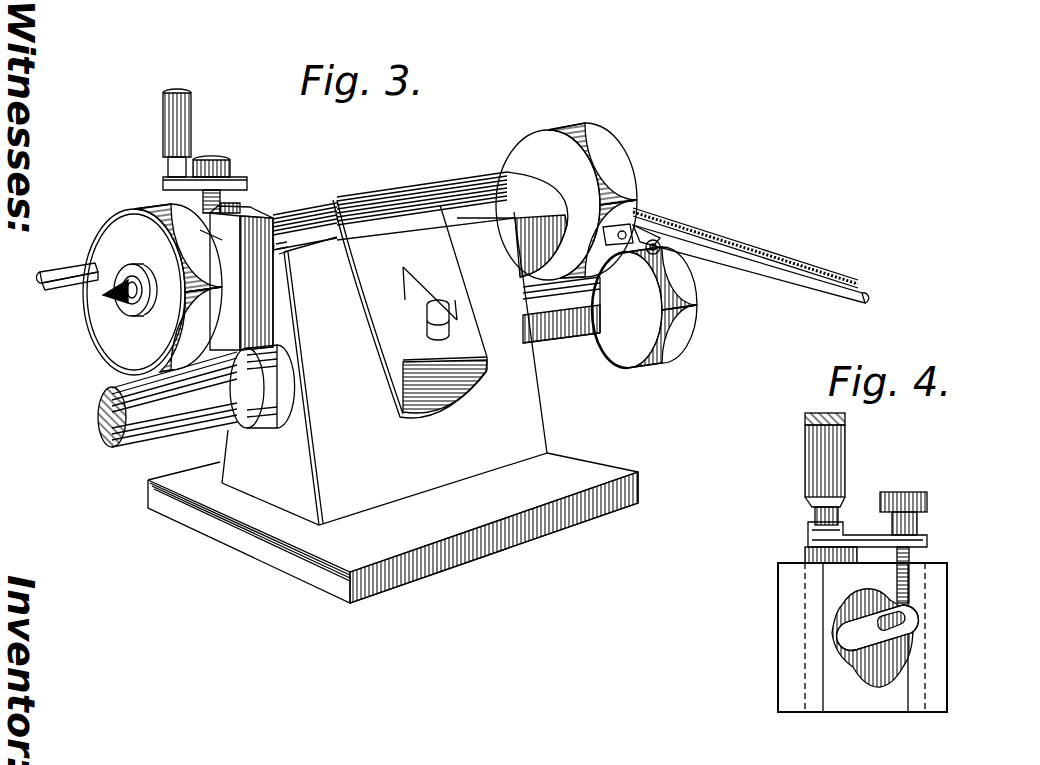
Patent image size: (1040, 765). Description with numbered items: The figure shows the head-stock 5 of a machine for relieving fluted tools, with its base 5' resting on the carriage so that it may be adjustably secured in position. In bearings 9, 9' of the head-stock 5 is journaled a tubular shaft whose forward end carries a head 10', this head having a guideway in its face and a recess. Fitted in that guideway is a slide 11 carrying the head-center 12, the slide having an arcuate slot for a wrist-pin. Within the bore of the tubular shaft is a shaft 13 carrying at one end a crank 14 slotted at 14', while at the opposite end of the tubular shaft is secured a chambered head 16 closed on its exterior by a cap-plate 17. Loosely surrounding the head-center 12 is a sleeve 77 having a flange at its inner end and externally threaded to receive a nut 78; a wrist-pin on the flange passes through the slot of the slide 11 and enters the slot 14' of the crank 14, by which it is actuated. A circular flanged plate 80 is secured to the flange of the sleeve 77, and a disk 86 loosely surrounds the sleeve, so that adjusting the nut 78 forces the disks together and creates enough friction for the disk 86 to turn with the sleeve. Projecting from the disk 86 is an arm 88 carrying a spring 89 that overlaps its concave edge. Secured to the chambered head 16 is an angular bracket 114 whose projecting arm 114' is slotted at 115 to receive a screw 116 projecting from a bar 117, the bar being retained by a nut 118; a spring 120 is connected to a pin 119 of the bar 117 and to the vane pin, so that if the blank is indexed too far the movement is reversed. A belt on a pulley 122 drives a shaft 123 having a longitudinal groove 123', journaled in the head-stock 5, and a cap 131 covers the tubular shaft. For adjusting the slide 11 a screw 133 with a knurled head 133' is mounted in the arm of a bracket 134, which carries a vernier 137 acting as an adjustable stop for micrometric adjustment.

In FIG. 3, the head-stock 5 is at (384, 368).
In FIG. 3, the base 5' is at (393, 528).
In FIG. 3, the bearing 9 is at (305, 222).
In FIG. 3, the bearing 9' is at (426, 197).
In FIG. 3, the head 10' is at (251, 261).
In FIG. 4, the head 10' is at (841, 637).
In FIG. 3, the slide 11 is at (212, 218).
In FIG. 3, the head-center 12 is at (120, 300).
In FIG. 4, the shaft 13 is at (870, 628).
In FIG. 4, the crank 14 is at (919, 629).
In FIG. 4, the slot 14' is at (942, 618).
In FIG. 3, the chambered head 16 is at (566, 201).
In FIG. 3, the cap-plate 17 is at (622, 158).
In FIG. 3, the sleeve 77 is at (130, 305).
In FIG. 3, the nut 78 is at (128, 266).
In FIG. 3, the circular flanged plate 80 is at (205, 281).
In FIG. 3, the disk 86 is at (158, 240).
In FIG. 3, the arm 88 is at (58, 283).
In FIG. 3, the spring 89 is at (68, 264).
In FIG. 3, the angular bracket 114 is at (643, 204).
In FIG. 3, the projecting arm 114' is at (691, 224).
In FIG. 3, the slot 115 is at (661, 242).
In FIG. 3, the screw 116 is at (656, 254).
In FIG. 3, the bar 117 is at (740, 262).
In FIG. 3, the nut 118 is at (636, 248).
In FIG. 3, the pin 119 is at (866, 298).
In FIG. 3, the spring 120 is at (738, 245).
In FIG. 3, the pulley 122 is at (644, 307).
In FIG. 3, the shaft 123 is at (154, 415).
In FIG. 3, the longitudinal groove 123' is at (227, 397).
In FIG. 3, the cap 131 is at (406, 292).
In FIG. 3, the screw 133 is at (243, 182).
In FIG. 4, the screw 133 is at (940, 574).
In FIG. 3, the knurled head 133' is at (221, 153).
In FIG. 4, the knurled head 133' is at (932, 509).
In FIG. 3, the bracket 134 is at (180, 205).
In FIG. 4, the bracket 134 is at (868, 545).
In FIG. 3, the vernier 137 is at (166, 122).
In FIG. 4, the vernier 137 is at (835, 454).